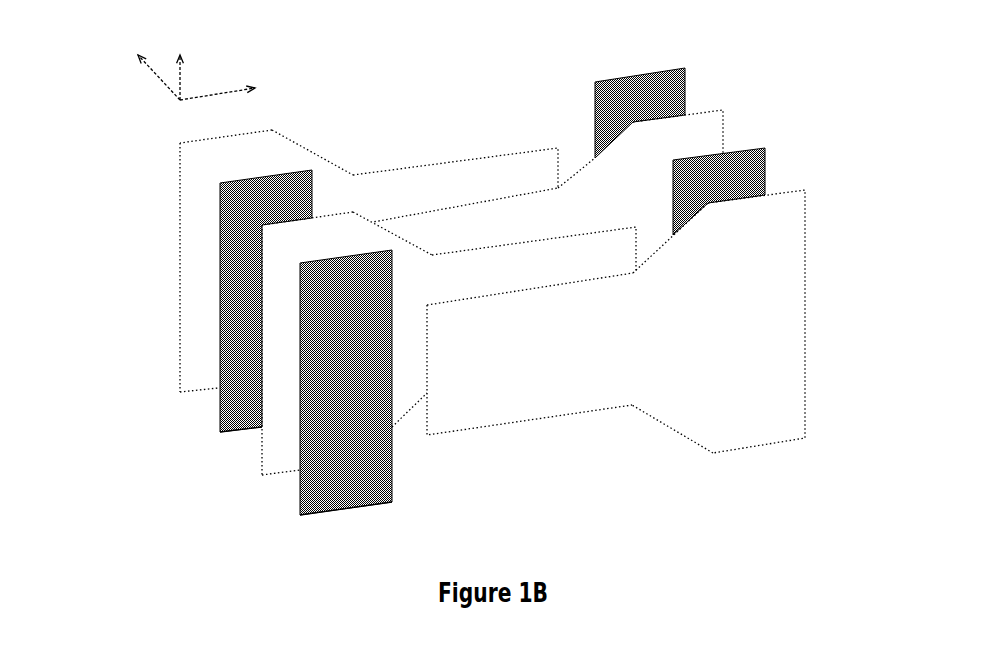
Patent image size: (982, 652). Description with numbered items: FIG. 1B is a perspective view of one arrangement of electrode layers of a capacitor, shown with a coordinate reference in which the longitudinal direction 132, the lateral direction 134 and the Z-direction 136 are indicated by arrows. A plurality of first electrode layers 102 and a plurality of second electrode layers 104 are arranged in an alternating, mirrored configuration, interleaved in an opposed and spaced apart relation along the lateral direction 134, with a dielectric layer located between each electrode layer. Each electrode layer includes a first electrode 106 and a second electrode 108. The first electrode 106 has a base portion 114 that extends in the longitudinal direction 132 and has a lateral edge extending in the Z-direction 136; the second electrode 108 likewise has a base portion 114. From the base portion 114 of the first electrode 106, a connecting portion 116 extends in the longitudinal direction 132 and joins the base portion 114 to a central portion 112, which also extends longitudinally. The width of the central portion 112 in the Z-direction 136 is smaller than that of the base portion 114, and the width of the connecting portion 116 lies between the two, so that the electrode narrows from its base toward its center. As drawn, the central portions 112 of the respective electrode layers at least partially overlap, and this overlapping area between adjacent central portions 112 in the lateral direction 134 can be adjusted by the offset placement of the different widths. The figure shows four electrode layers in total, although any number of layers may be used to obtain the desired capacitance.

The first electrode layer 102 is at (171, 388).
The second electrode layer 104 is at (211, 426).
The first electrode 106 is at (180, 160).
The second electrode 108 is at (218, 198).
The central portion 112 is at (494, 291).
The base portion 114 is at (492, 281).
The connecting portion 116 is at (492, 291).
The longitudinal direction 132 is at (231, 90).
The lateral direction 134 is at (149, 69).
The Z-direction 136 is at (182, 69).